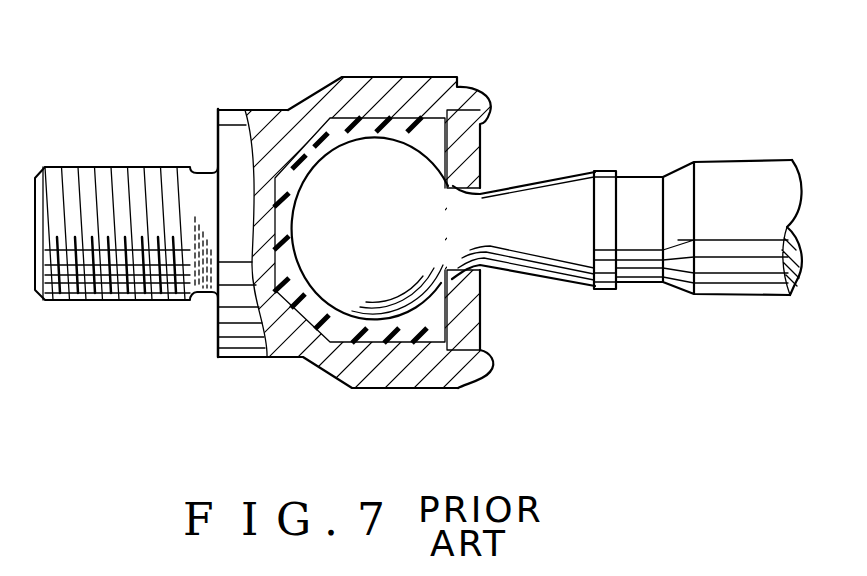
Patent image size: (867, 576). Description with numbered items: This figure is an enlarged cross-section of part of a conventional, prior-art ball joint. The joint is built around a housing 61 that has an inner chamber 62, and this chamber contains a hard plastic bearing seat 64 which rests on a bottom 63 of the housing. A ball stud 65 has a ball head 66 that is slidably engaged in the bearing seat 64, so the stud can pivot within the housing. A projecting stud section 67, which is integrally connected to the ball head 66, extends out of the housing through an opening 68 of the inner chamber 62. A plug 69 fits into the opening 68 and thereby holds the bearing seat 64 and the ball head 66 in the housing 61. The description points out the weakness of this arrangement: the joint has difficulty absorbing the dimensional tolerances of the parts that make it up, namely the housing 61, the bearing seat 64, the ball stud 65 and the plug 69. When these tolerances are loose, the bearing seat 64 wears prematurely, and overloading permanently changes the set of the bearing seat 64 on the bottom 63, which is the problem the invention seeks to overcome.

The housing 61 is at (411, 90).
The inner chamber 62 is at (367, 93).
The bottom 63 is at (272, 263).
The bearing seat 64 is at (327, 317).
The ball stud 65 is at (556, 200).
The ball head 66 is at (410, 200).
The projecting stud section 67 is at (738, 185).
The opening 68 is at (457, 305).
The plug 69 is at (460, 338).